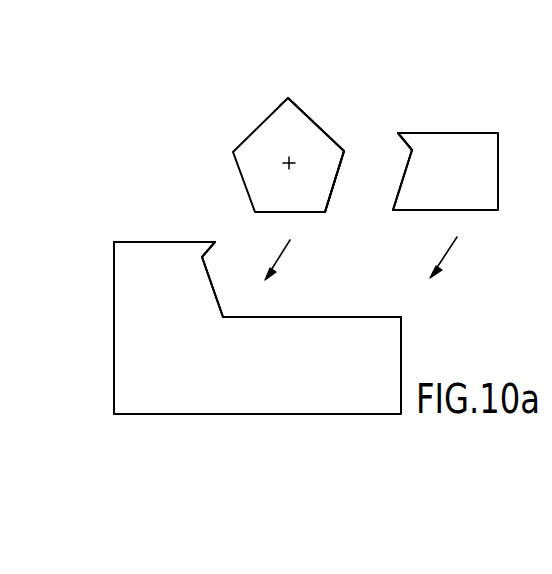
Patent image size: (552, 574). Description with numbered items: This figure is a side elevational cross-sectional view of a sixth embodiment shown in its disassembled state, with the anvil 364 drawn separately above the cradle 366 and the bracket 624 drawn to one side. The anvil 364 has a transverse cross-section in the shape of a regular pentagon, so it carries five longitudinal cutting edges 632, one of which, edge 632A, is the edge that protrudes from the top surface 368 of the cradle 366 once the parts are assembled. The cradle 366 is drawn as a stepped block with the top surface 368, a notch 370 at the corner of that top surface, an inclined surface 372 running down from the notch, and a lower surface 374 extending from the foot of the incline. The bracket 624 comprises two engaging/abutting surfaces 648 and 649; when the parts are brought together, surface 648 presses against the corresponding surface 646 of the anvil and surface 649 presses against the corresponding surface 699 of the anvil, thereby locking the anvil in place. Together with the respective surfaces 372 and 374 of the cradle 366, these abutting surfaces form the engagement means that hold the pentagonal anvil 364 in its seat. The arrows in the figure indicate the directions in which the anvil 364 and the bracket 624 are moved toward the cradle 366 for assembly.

The pentagonal gasket / seal member 364 is at (265, 142).
The protruding cutting edge 632A is at (287, 98).
The anvil surface 646 is at (314, 122).
The longitudinal cutting edges 632 is at (342, 158).
The anvil surface 699 is at (337, 182).
The bracket 624 is at (444, 145).
The engaging/abutting surface 648 is at (405, 148).
The engaging/abutting surface 649 is at (400, 182).
The cradle 366 is at (137, 353).
The top surface 368 is at (183, 240).
The notch of base 370 is at (205, 250).
The cradle surface 372 is at (213, 288).
The cradle surface 374 is at (257, 317).